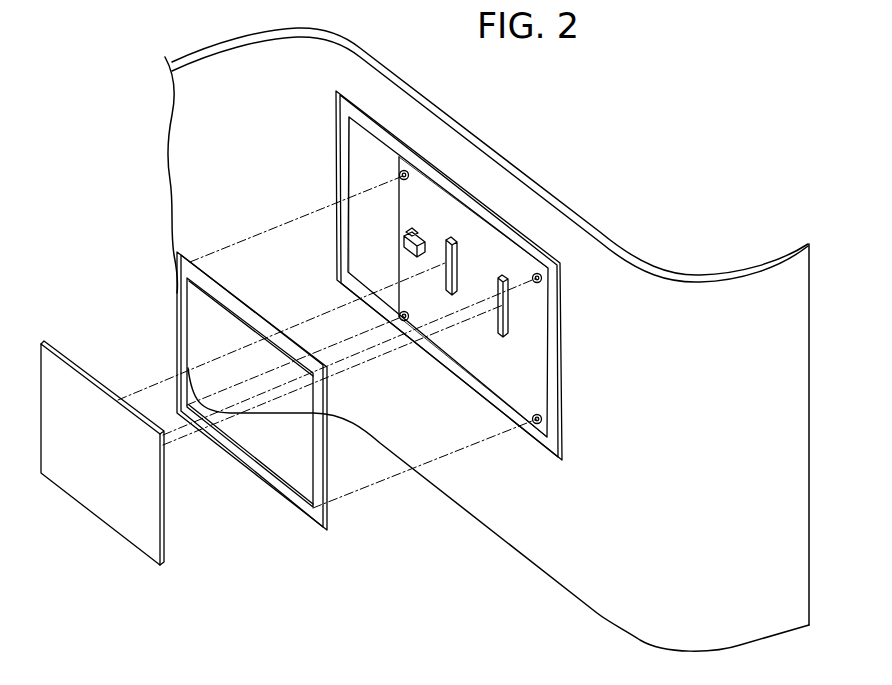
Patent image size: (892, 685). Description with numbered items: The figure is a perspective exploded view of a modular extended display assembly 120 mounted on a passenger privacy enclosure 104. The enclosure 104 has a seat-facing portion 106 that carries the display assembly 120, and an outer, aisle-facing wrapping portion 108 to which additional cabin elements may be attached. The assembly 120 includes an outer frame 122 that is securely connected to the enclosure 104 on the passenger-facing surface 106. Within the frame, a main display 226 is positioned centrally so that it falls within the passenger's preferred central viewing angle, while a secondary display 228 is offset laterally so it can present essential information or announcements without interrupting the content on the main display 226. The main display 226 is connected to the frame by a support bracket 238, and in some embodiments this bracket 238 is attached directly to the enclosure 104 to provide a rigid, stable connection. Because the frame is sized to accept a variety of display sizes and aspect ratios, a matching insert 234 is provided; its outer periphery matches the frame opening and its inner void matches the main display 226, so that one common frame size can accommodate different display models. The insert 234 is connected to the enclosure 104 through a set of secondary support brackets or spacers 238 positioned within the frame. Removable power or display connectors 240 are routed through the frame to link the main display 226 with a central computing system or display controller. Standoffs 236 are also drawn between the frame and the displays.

The privacy enclosure 104 is at (656, 237).
The seat-facing portion 106 is at (583, 256).
The aisle-facing wrapping portion 108 is at (762, 281).
The extended display assembly 120 is at (488, 162).
The outer frame 122 is at (500, 225).
The main display 226 is at (102, 453).
The secondary display 228 is at (362, 153).
The matching insert 234 is at (318, 385).
The standoff 236 is at (511, 314).
The support bracket 238 is at (542, 274).
The power and/or display connectors 240 is at (408, 248).